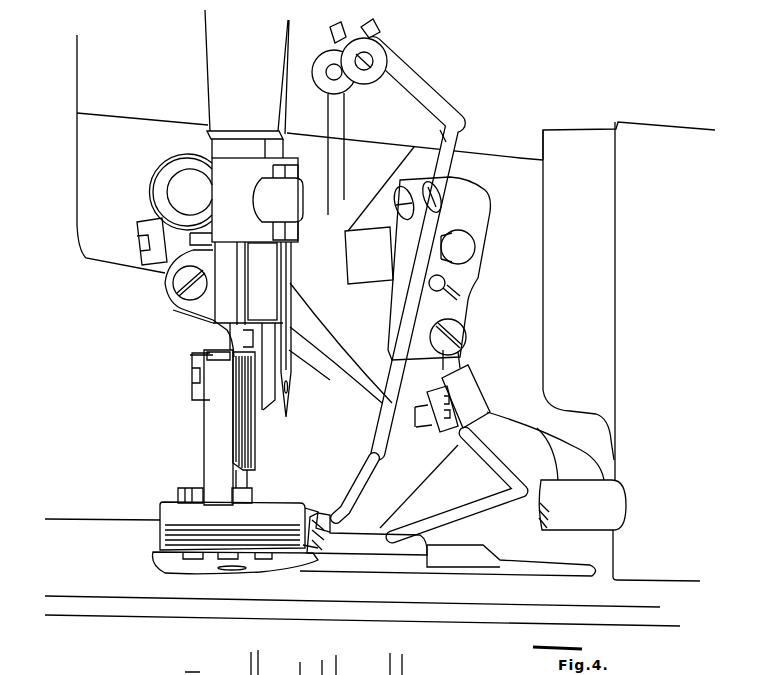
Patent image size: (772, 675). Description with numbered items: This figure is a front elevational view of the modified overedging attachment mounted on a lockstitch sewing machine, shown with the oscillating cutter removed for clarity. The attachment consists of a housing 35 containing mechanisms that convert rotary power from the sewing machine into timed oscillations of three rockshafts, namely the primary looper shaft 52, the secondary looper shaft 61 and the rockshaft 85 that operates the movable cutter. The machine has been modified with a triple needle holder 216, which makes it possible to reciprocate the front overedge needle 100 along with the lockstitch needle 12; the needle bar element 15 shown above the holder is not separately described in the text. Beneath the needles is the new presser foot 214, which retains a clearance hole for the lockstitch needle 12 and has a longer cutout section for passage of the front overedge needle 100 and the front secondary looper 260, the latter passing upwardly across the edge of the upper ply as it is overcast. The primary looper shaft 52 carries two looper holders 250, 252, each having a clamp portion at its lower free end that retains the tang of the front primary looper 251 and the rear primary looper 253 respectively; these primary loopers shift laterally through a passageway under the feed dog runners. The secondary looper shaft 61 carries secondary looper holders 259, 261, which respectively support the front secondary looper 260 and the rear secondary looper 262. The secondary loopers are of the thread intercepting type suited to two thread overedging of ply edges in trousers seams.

The lockstitch needle 12 is at (238, 382).
The needle bar bushing 15 is at (226, 148).
The housing 35 is at (509, 150).
The primary looper shaft 52 is at (174, 193).
The secondary looper shaft 61 is at (472, 248).
The rockshaft 85 is at (605, 491).
The front overedge needle 100 is at (288, 370).
The presser foot 214 is at (190, 456).
The triple needle holder 216 is at (293, 195).
The looper holder 250 is at (472, 388).
The front primary looper 251 is at (440, 513).
The looper holder 252 is at (422, 420).
The rear primary looper 253 is at (428, 495).
The secondary looper holder 259 is at (455, 285).
The front secondary looper 260 is at (343, 488).
The secondary looper holder 261 is at (420, 188).
The rear secondary looper 262 is at (312, 525).